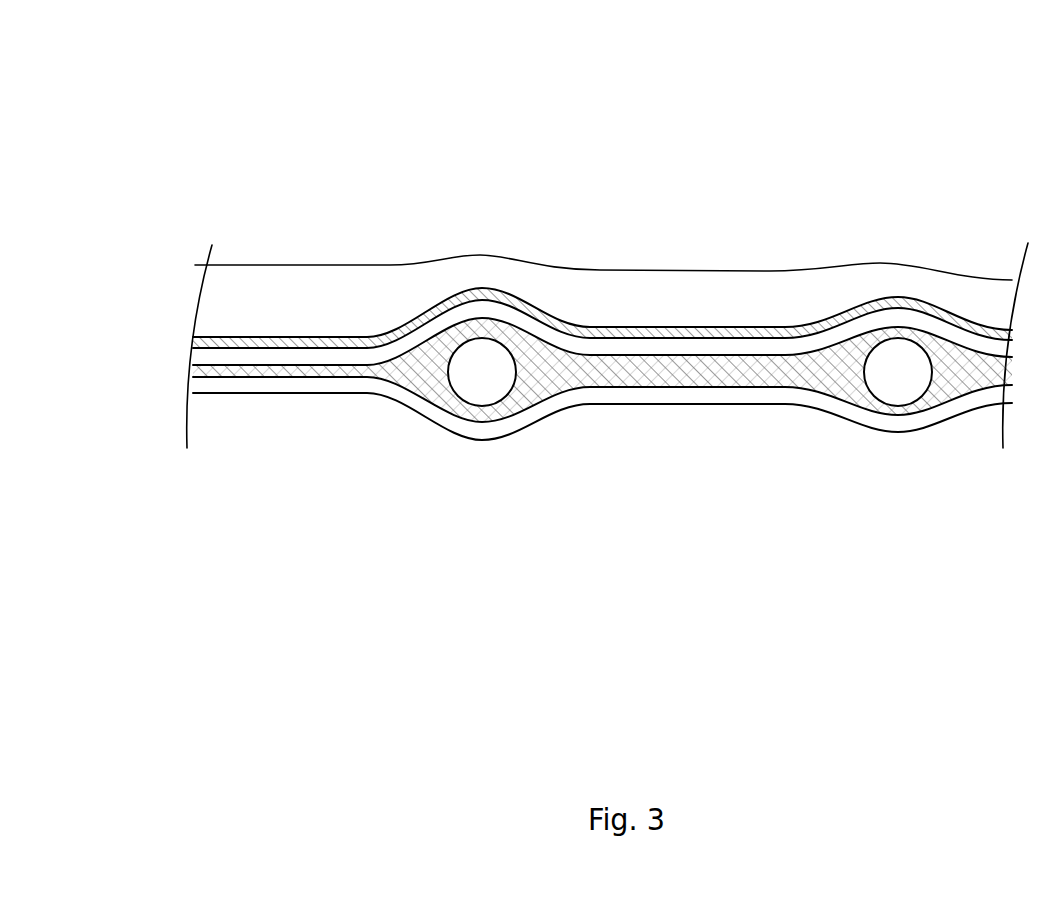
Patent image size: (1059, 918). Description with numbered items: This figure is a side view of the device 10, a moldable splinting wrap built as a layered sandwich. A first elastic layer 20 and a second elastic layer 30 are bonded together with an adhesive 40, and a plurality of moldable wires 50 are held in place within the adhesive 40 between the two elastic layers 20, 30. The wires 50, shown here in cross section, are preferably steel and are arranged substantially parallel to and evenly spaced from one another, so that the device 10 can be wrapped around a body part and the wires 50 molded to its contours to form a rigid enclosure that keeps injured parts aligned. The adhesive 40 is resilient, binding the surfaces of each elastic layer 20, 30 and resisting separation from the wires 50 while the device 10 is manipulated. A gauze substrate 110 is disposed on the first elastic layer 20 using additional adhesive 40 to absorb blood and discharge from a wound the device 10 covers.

The device 10 is at (566, 257).
The gauze substrate 110 is at (324, 280).
The first elastic layer 20 is at (530, 327).
The second elastic layer 30 is at (335, 385).
The adhesive 40 is at (695, 375).
The moldable wires 50 is at (477, 383).